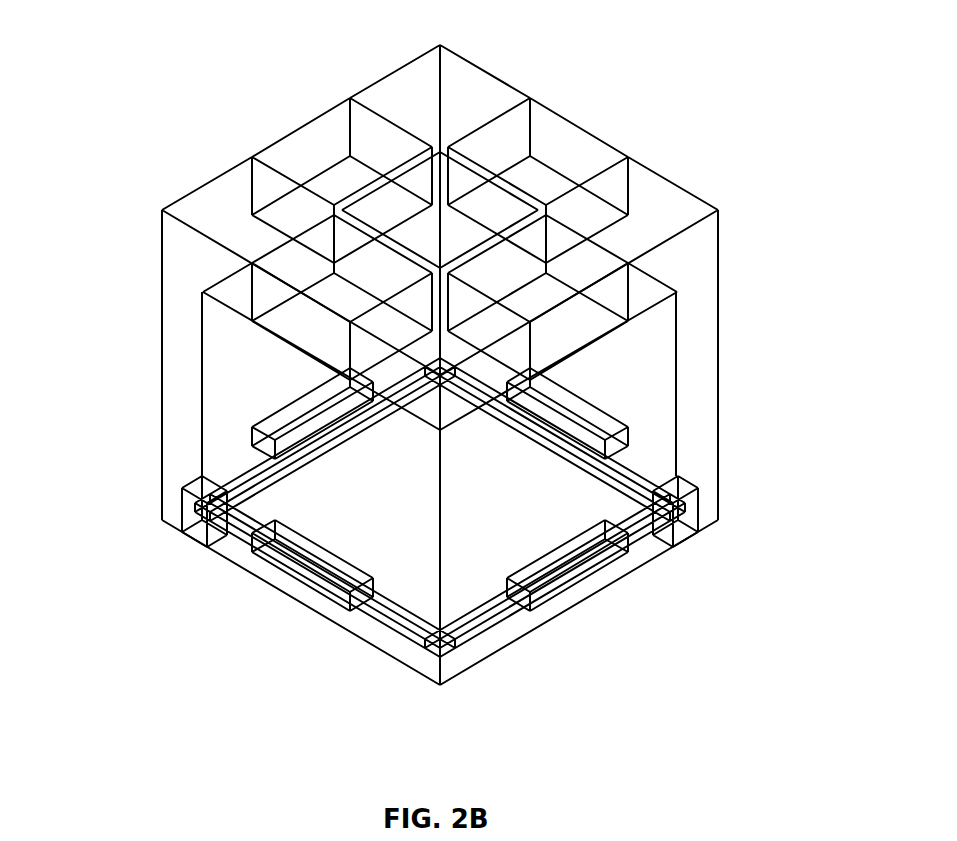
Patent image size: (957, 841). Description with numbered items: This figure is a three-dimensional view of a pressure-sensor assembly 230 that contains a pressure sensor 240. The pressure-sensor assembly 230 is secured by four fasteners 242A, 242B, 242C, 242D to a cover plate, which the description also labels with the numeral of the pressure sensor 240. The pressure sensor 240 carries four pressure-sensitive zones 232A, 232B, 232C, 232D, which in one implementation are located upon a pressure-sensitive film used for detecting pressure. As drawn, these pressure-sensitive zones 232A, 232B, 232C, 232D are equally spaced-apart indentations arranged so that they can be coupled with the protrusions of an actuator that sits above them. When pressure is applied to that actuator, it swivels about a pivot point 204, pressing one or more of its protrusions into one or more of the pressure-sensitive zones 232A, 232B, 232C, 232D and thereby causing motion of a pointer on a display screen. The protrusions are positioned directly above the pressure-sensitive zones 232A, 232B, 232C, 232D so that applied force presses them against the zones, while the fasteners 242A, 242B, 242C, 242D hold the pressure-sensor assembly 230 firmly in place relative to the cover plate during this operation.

The pressure-sensor assembly 230 is at (235, 55).
The pressure sensor 240 is at (727, 227).
The pivot point 204 is at (449, 233).
The pressure-sensitive zone 232A is at (284, 281).
The pressure-sensitive zone 232B is at (565, 318).
The pressure-sensitive zone 232C is at (575, 157).
The pressure-sensitive zone 232D is at (317, 156).
The fastener 242A is at (296, 574).
The fastener 242B is at (585, 587).
The fastener 242C is at (604, 405).
The fastener 242D is at (269, 405).